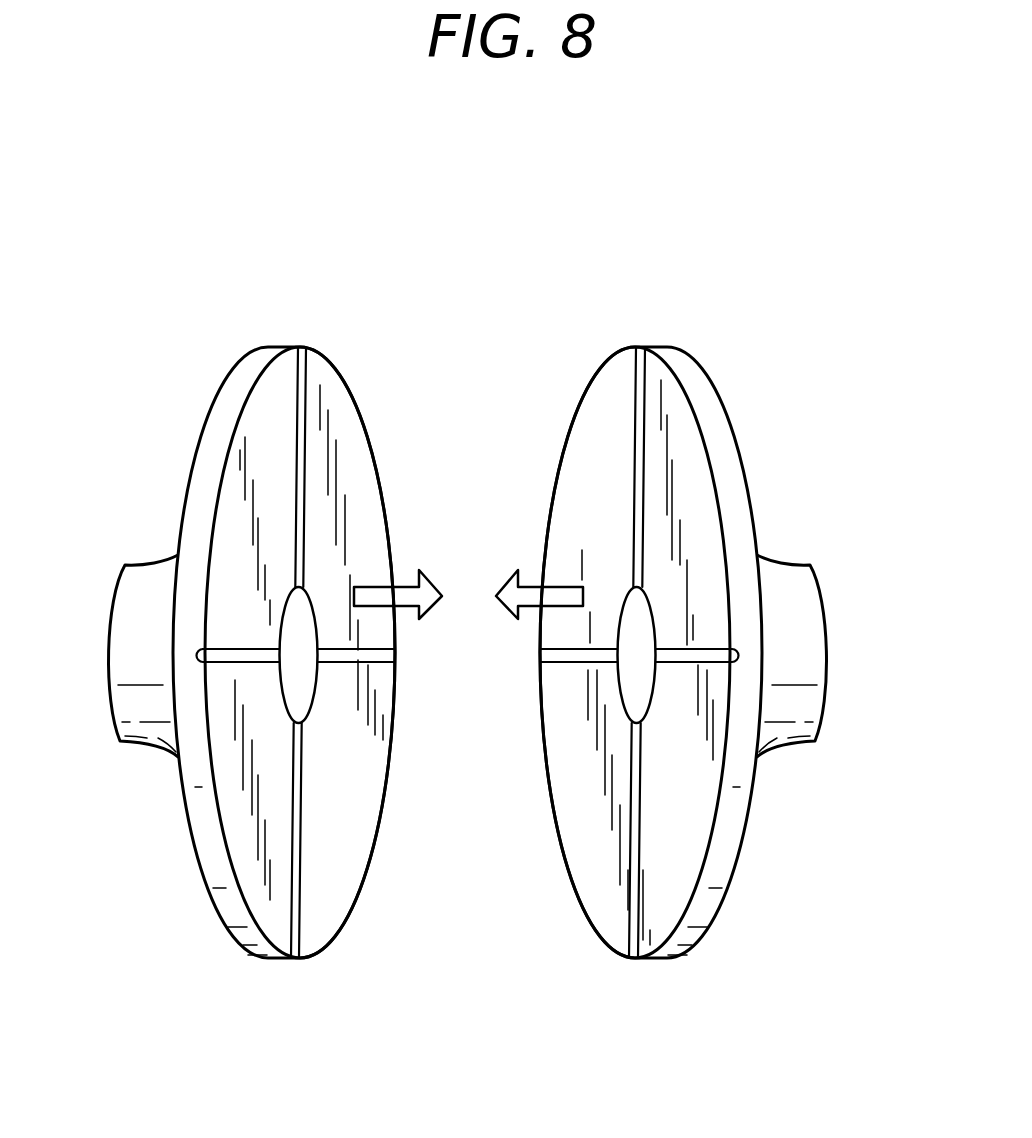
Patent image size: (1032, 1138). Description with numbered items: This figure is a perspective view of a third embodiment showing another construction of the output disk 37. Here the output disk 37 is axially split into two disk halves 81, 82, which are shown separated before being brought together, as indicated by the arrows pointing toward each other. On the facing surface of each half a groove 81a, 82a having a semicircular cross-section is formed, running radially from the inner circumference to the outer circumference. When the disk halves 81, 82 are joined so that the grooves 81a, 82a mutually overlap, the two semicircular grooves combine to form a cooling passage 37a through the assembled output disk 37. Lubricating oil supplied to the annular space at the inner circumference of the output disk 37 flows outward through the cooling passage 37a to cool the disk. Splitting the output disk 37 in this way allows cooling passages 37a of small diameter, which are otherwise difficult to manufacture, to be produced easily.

The output disk 37 is at (548, 262).
The disk half 81 is at (337, 357).
The disk half 82 is at (620, 353).
The groove 81a is at (300, 415).
The groove 82a is at (672, 652).
The cooling passage 37a is at (500, 616).